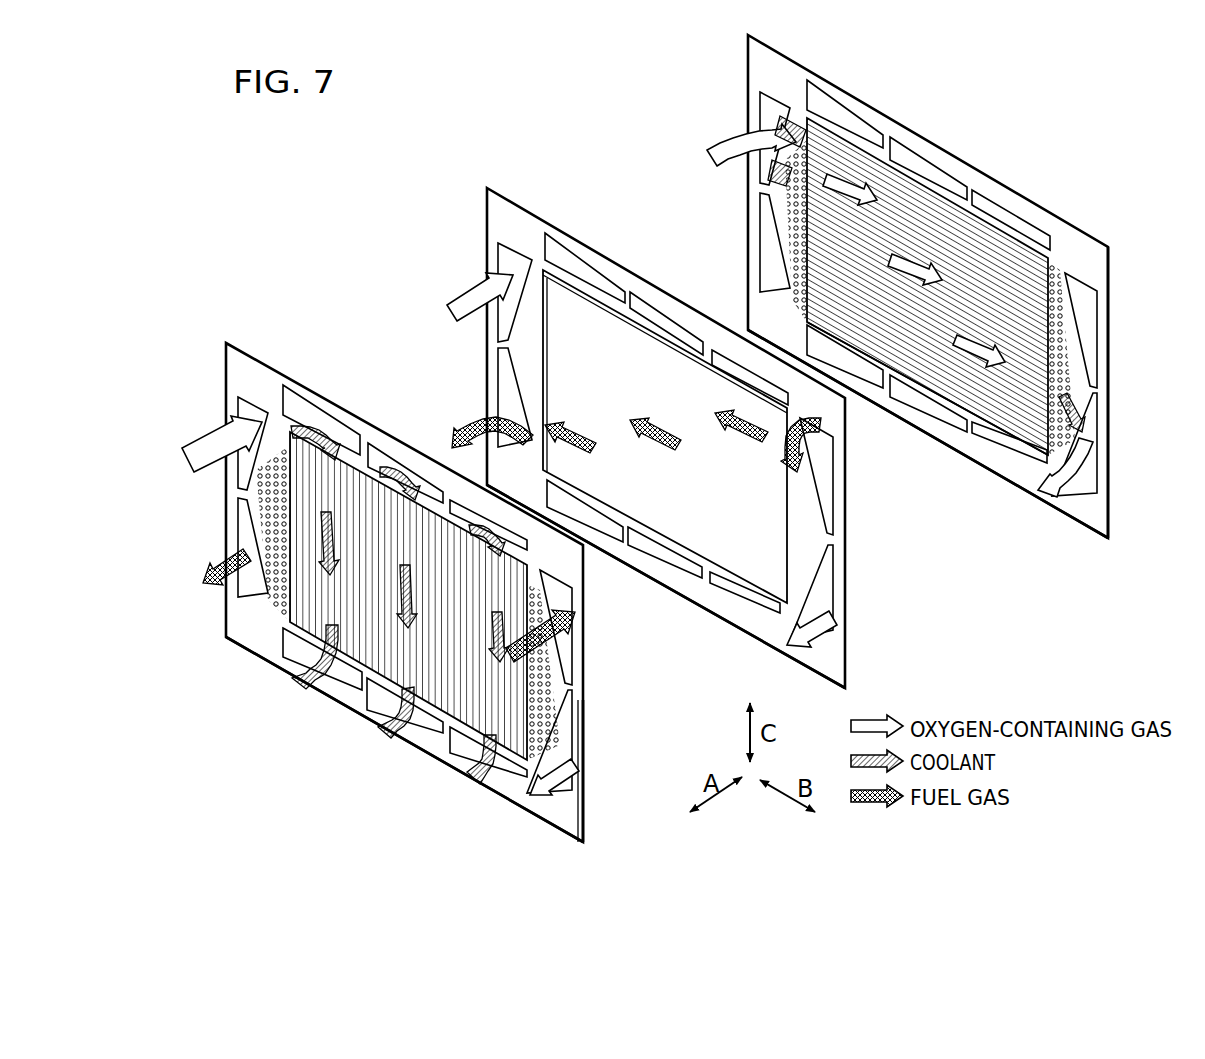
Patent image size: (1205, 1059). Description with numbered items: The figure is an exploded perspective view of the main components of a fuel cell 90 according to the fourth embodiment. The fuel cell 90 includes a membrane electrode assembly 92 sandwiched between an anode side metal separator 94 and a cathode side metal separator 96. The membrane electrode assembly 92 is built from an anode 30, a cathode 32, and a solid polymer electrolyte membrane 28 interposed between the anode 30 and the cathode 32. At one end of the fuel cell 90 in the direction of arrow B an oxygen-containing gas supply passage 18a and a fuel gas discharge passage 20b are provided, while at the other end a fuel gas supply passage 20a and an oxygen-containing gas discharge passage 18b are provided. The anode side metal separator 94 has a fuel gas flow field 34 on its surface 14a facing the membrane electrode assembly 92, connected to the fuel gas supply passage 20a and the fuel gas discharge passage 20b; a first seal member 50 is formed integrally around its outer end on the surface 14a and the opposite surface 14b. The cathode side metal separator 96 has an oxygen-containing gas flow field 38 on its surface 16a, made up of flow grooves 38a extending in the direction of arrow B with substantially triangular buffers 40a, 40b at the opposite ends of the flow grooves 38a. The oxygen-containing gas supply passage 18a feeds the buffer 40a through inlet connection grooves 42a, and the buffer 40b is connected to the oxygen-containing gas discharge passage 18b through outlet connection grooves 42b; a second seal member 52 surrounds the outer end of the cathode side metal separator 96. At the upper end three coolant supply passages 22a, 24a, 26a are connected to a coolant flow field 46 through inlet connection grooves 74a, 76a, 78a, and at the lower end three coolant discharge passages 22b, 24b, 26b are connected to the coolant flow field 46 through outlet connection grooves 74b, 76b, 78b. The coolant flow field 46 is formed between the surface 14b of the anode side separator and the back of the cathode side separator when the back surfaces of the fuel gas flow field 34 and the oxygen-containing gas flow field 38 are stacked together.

The fuel cell 90 is at (266, 191).
The membrane electrode assembly 92 is at (485, 187).
The anode side metal separator 94 is at (224, 342).
The cathode side metal separator 96 is at (746, 34).
The surface 14a is at (582, 828).
The surface 14b is at (585, 806).
The surface 16a is at (1083, 507).
The oxygen-containing gas supply passage 18a is at (245, 412).
The oxygen-containing gas discharge passage 18b is at (580, 720).
The fuel gas supply passage 20a is at (565, 647).
The fuel gas discharge passage 20b is at (242, 518).
The coolant supply passage 22a is at (305, 408).
The coolant discharge passage 22b is at (293, 645).
The coolant supply passage 24a is at (377, 457).
The coolant discharge passage 24b is at (373, 690).
The coolant supply passage 26a is at (467, 505).
The coolant discharge passage 26b is at (455, 740).
The solid polymer electrolyte membrane 28 is at (754, 626).
The anode 30 is at (660, 518).
The cathode 32 is at (695, 538).
The fuel gas flow field 34 is at (265, 452).
The oxygen-containing gas flow field 38 is at (905, 222).
The flow grooves 38a is at (966, 388).
The buffer 40a is at (768, 222).
The buffer 40b is at (1072, 345).
The inlet connection grooves 42a is at (788, 125).
The outlet connection grooves 42b is at (1062, 408).
The coolant flow field 46 is at (303, 604).
The first seal member 50 is at (565, 832).
The second seal member 52 is at (1068, 223).
The inlet connection groove 74a is at (851, 140).
The outlet connection groove 74b is at (853, 365).
The inlet connection groove 76a is at (920, 170).
The outlet connection groove 76b is at (920, 400).
The inlet connection groove 78a is at (1025, 236).
The outlet connection groove 78b is at (1000, 442).